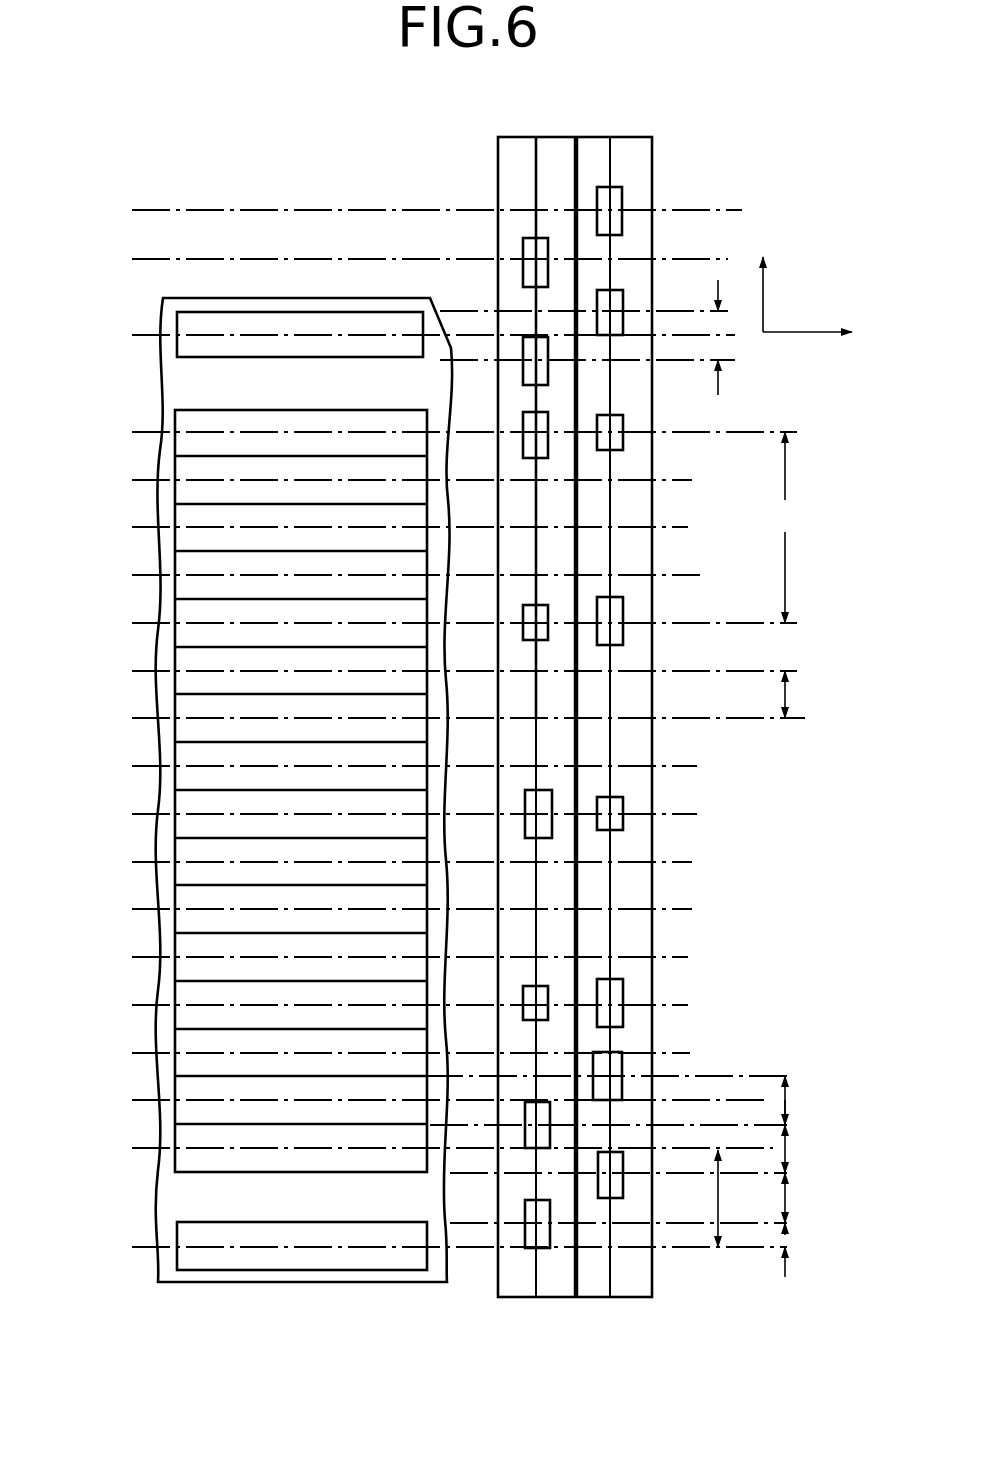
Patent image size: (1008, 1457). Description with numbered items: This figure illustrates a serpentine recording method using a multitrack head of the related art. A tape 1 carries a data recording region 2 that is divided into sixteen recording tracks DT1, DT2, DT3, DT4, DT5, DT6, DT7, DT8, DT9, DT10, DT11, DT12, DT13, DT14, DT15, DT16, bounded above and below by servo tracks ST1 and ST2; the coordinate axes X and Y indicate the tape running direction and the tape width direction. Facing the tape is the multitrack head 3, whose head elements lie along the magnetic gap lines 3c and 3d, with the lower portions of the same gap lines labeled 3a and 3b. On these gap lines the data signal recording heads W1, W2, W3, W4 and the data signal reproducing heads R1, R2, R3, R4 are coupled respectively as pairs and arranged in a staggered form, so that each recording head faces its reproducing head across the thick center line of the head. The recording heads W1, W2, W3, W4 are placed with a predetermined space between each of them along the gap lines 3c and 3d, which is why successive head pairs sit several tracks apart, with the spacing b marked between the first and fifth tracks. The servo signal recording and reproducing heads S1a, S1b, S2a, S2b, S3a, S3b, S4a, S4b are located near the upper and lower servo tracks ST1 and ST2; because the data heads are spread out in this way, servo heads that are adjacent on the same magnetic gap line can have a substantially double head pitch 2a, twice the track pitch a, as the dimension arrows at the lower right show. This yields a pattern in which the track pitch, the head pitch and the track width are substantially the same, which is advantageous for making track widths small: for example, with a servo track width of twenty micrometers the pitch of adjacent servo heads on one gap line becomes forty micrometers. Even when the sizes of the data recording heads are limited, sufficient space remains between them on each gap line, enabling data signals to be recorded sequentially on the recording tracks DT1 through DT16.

The magnetic tape 1 is at (168, 262).
The data track area 2 is at (198, 408).
The magnetic head 3 is at (496, 177).
The head element row (lower left) 3a is at (557, 1287).
The head element row (lower right) 3b is at (632, 1287).
The magnetic gap line 3c is at (533, 153).
The magnetic gap line 3d is at (610, 153).
The servo track 1 ST1 is at (398, 334).
The servo track 2 ST2 is at (424, 1246).
The recording track DT1 is at (434, 436).
The recording track DT2 is at (382, 484).
The recording track DT3 is at (380, 531).
The recording track DT4 is at (386, 579).
The recording track DT5 is at (434, 627).
The recording track DT6 is at (434, 675).
The recording track DT7 is at (438, 722).
The recording track DT8 is at (384, 770).
The recording track DT9 is at (384, 818).
The recording track DT10 is at (382, 866).
The recording track DT11 is at (382, 913).
The recording track DT12 is at (380, 961).
The recording track DT13 is at (380, 1009).
The recording track DT14 is at (381, 1057).
The recording track DT15 is at (419, 1104).
The recording track DT16 is at (422, 1152).
The servo head element S1a is at (525, 1245).
The servo head element S1b is at (523, 380).
The servo head element S2a is at (623, 1185).
The servo head element S2b is at (620, 292).
The servo head element S3a is at (530, 1130).
The servo head element S3b is at (523, 257).
The servo head element S4a is at (615, 1072).
The servo head element S4b is at (618, 203).
The data signal recording head W1 is at (538, 412).
The data signal recording head W2 is at (612, 597).
The data signal recording head W3 is at (540, 790).
The data signal recording head W4 is at (612, 979).
The data signal reproducing head R1 is at (610, 415).
The data signal reproducing head R2 is at (536, 605).
The data signal reproducing head R3 is at (612, 797).
The data signal reproducing head R4 is at (538, 986).
The track pitch a is at (738, 778).
The spacing b is at (786, 527).
The double head pitch 2a is at (702, 1198).
The X axis (tape running direction) X is at (819, 334).
The Y axis (tape width direction) Y is at (763, 279).